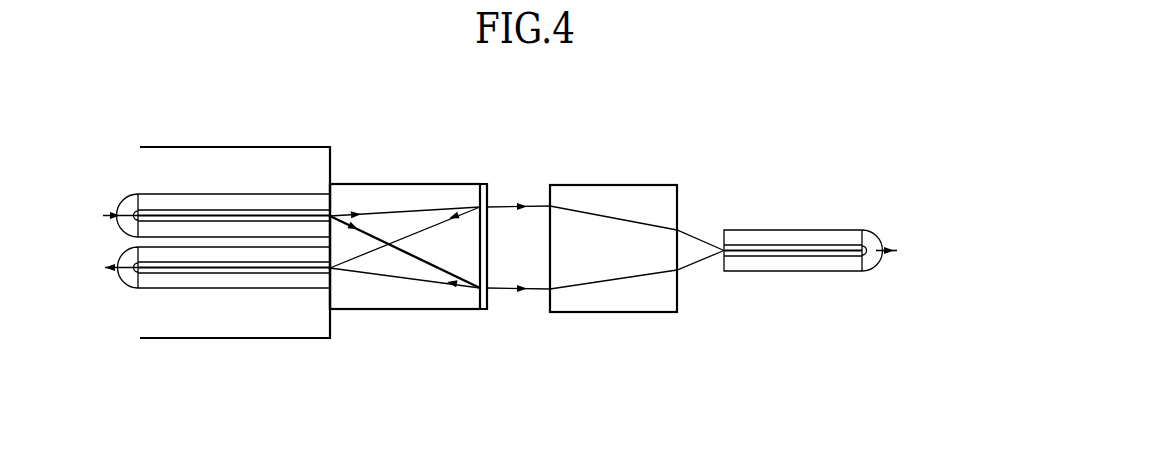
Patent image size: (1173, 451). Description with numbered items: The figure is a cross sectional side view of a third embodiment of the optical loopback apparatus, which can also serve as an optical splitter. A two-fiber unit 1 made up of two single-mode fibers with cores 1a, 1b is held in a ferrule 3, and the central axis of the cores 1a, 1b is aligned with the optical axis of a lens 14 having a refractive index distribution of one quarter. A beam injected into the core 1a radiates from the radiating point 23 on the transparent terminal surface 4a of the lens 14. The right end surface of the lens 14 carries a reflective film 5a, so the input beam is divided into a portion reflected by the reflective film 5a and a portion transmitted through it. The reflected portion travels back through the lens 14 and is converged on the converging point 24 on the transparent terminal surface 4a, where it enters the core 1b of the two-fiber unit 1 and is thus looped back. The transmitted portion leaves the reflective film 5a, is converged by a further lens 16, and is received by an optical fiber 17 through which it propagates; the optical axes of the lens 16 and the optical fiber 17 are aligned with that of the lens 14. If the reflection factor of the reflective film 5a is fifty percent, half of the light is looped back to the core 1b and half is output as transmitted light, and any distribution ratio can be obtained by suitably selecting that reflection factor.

The two-fiber unit 1 is at (170, 297).
The core 1a is at (167, 210).
The core 1b is at (242, 278).
The ferrule 3 is at (153, 337).
The transparent terminal surface 4a is at (331, 185).
The reflective film 5a is at (487, 300).
The lens 14 is at (433, 309).
The lens 16 is at (662, 185).
The optical fiber 17 is at (770, 230).
The radiating point 23 is at (333, 215).
The converging point 24 is at (334, 271).